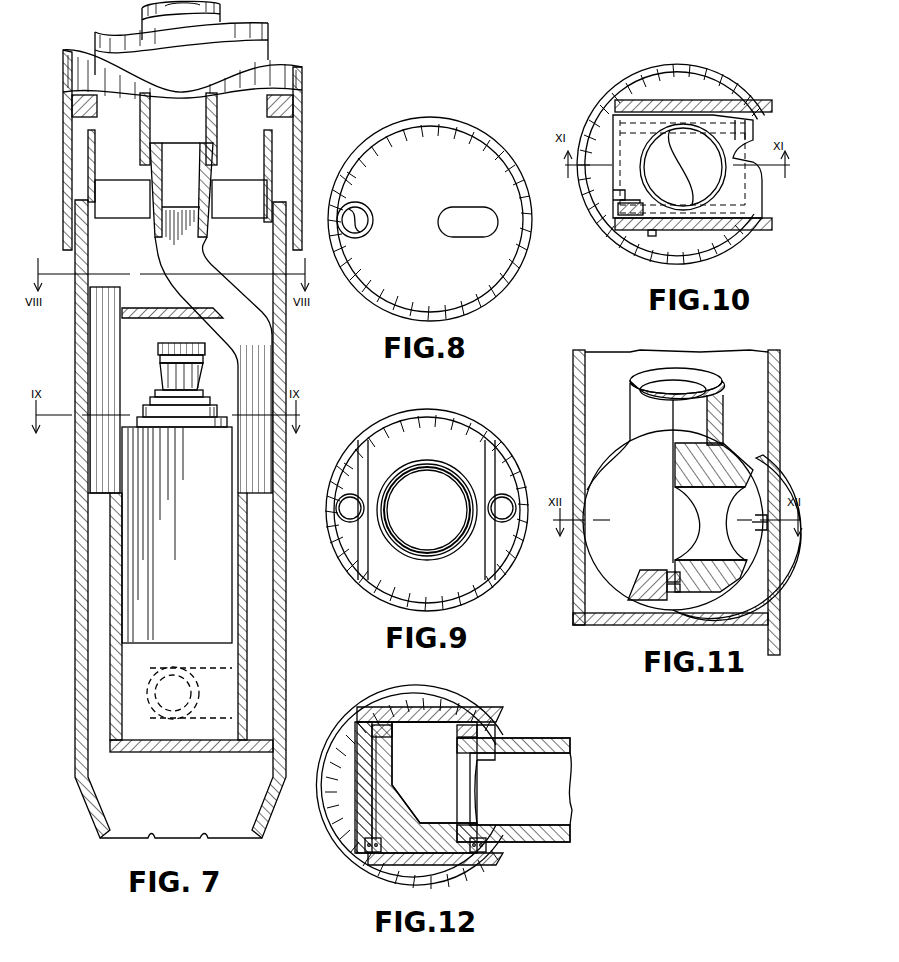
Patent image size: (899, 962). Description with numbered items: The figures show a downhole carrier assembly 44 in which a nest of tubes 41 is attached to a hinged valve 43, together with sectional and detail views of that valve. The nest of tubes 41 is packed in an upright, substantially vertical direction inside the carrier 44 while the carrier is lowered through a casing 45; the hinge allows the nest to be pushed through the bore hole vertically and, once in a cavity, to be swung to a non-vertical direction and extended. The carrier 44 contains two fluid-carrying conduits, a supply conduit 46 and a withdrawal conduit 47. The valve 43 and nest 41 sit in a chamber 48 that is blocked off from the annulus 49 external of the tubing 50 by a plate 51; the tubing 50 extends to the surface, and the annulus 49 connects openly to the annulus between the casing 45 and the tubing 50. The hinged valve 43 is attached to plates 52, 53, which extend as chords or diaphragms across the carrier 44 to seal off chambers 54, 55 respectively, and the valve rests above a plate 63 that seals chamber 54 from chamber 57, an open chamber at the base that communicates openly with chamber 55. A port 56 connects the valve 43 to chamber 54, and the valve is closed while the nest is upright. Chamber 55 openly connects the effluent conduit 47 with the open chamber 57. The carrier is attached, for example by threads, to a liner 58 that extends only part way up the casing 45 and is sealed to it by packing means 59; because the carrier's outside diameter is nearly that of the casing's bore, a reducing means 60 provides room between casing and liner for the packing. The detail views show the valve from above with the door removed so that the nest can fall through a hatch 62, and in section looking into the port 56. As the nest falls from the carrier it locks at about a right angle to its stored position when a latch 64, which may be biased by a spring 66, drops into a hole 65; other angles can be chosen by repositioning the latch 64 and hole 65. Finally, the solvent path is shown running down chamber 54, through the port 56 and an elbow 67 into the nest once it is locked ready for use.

In FIG. 7, the nest of tubes 41 is at (180, 552).
In FIG. 9, the nest of tubes 41 is at (441, 460).
In FIG. 7, the hinged valve 43 is at (128, 708).
In FIG. 7, the carrier assembly 44 is at (75, 690).
In FIG. 8, the carrier assembly 44 is at (434, 120).
In FIG. 9, the carrier assembly 44 is at (488, 437).
In FIG. 10, the carrier assembly 44 is at (757, 236).
In FIG. 12, the carrier assembly 44 is at (482, 712).
In FIG. 7, the casing 45 is at (300, 86).
In FIG. 7, the supply conduit 46 is at (243, 298).
In FIG. 8, the supply conduit 46 is at (485, 210).
In FIG. 9, the supply conduit 46 is at (488, 508).
In FIG. 7, the withdrawal conduit 47 is at (119, 348).
In FIG. 8, the withdrawal conduit 47 is at (374, 216).
In FIG. 9, the withdrawal conduit 47 is at (363, 508).
In FIG. 7, the chamber 48 is at (188, 341).
In FIG. 7, the annulus 49 is at (127, 210).
In FIG. 7, the tubing 50 is at (142, 138).
In FIG. 7, the plate 51 is at (160, 308).
In FIG. 8, the plate 51 is at (426, 175).
In FIG. 7, the plate 52 is at (238, 544).
In FIG. 9, the plate 52 is at (487, 465).
In FIG. 10, the plate 52 is at (733, 110).
In FIG. 7, the plate 53 is at (110, 573).
In FIG. 9, the plate 53 is at (369, 452).
In FIG. 10, the plate 53 is at (628, 228).
In FIG. 12, the plate 53 is at (372, 858).
In FIG. 7, the chamber 54 is at (258, 620).
In FIG. 9, the chamber 54 is at (505, 476).
In FIG. 10, the chamber 54 is at (686, 96).
In FIG. 12, the chamber 54 is at (412, 700).
In FIG. 7, the chamber 55 is at (100, 617).
In FIG. 9, the chamber 55 is at (352, 468).
In FIG. 10, the chamber 55 is at (686, 254).
In FIG. 12, the chamber 55 is at (440, 870).
In FIG. 7, the port 56 is at (224, 704).
In FIG. 11, the port 56 is at (694, 531).
In FIG. 12, the port 56 is at (436, 750).
In FIG. 7, the chamber 57 is at (176, 808).
In FIG. 7, the liner 58 is at (104, 152).
In FIG. 7, the packing means 59 is at (80, 105).
In FIG. 7, the reducing means 60 is at (88, 168).
In FIG. 10, the hatch 62 is at (766, 140).
In FIG. 7, the plate 63 is at (205, 752).
In FIG. 11, the plate 63 is at (615, 625).
In FIG. 11, the latch 64 is at (630, 600).
In FIG. 11, the hole 65 is at (766, 527).
In FIG. 11, the spring 66 is at (668, 570).
In FIG. 12, the elbow 67 is at (440, 793).